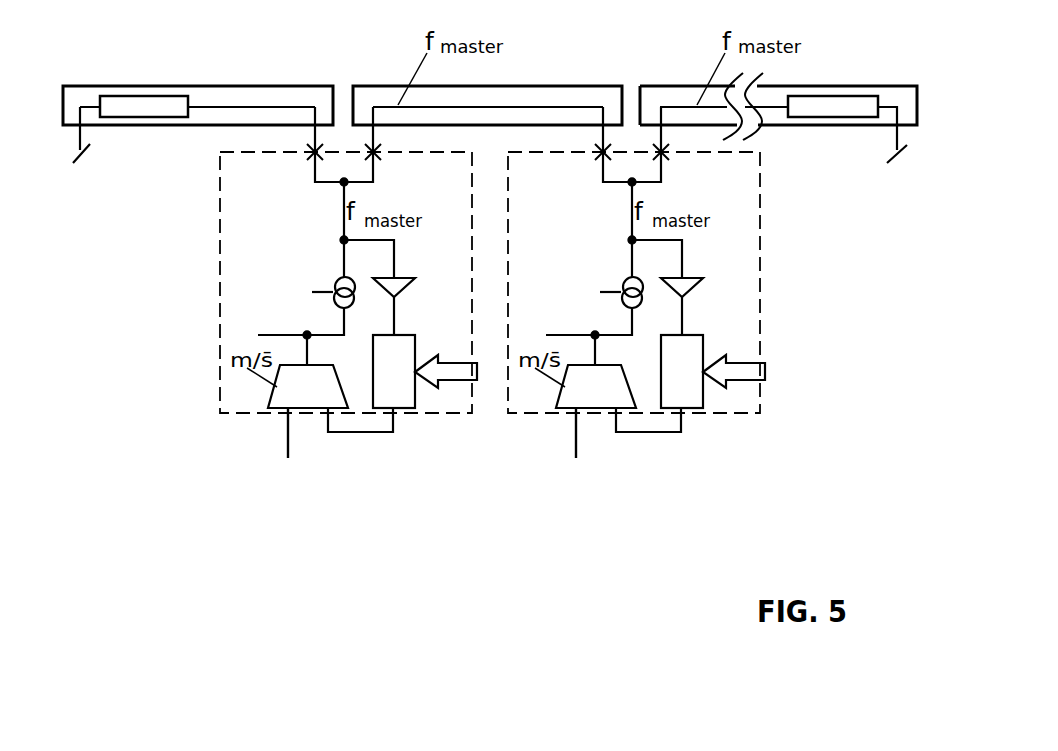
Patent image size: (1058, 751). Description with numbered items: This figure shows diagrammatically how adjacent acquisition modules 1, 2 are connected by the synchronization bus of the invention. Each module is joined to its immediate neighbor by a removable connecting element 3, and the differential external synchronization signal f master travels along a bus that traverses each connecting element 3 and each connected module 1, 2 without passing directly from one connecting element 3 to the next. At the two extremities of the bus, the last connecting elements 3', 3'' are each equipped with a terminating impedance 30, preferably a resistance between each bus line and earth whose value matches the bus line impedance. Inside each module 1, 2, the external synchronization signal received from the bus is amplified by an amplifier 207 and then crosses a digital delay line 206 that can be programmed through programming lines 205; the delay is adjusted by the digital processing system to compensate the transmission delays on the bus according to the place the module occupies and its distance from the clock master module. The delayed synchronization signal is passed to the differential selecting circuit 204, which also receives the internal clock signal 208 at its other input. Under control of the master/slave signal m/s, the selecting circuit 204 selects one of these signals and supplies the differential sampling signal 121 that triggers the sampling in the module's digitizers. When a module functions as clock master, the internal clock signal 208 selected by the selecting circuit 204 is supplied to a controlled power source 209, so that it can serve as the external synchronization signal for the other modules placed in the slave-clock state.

The acquisition module 1 is at (227, 383).
The acquisition module 2 is at (748, 397).
The connecting element 3 is at (518, 73).
The last connecting element 3' is at (198, 92).
The last connecting element 3'' is at (778, 92).
The terminating impedance 30 is at (135, 105).
The differential sampling signal 121 is at (273, 333).
The differential selecting circuit 204 is at (282, 398).
The programming lines 205 is at (460, 368).
The digital delay line 206 is at (403, 395).
The amplifier 207 is at (405, 287).
The internal clock signal 208 is at (288, 457).
The controlled power source 209 is at (337, 282).